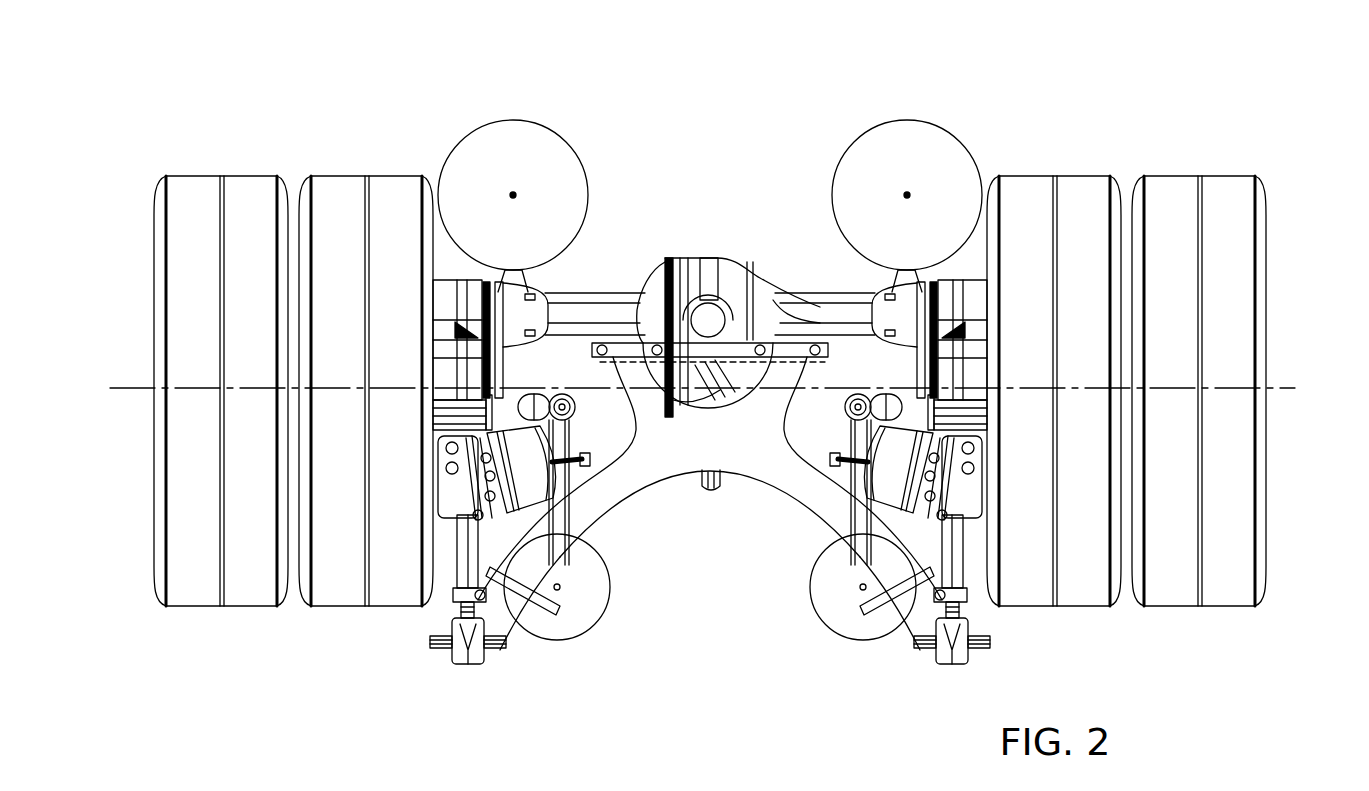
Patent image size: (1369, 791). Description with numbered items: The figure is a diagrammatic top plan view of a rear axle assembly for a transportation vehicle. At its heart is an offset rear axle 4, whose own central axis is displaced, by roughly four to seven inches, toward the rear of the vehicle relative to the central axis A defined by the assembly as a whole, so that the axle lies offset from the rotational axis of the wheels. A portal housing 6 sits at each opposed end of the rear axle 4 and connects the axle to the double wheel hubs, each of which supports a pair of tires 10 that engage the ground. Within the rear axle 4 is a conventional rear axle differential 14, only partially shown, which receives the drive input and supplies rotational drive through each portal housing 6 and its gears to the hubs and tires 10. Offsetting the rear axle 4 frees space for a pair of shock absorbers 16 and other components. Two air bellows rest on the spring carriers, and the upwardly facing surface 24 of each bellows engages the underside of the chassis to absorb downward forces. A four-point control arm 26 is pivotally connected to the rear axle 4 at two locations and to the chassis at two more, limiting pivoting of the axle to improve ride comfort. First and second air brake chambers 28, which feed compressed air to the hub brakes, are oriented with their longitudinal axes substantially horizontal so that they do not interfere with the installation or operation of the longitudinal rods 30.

The rear axle 4 is at (607, 291).
The portal housing 6 is at (447, 305).
The tires 10 is at (177, 583).
The rear axle differential 14 is at (735, 272).
The shock absorbers 16 is at (545, 410).
The upwardly facing surface 24 is at (512, 140).
The four-point control arm 26 is at (737, 463).
The air brake chambers 28 is at (517, 485).
The longitudinal rods 30 is at (462, 547).
The central axis A is at (1283, 388).